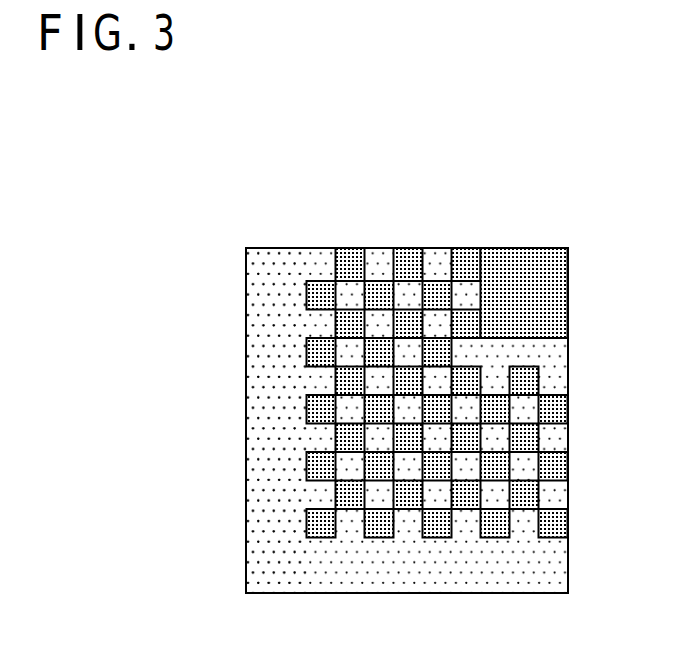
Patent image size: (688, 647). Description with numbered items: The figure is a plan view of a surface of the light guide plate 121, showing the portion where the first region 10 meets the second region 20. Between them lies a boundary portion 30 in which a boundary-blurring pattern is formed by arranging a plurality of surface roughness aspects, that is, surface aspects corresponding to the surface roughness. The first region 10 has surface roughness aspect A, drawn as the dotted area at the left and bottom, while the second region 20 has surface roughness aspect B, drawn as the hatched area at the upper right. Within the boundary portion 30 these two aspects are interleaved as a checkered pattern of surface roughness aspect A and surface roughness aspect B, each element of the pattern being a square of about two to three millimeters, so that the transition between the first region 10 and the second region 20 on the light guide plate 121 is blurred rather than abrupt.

The first region 10 is at (307, 248).
The boundary portion 30 is at (480, 248).
The second region 20 is at (568, 248).
The light guide plate 121 is at (462, 195).
The surface roughness aspect A is at (375, 580).
The surface roughness aspect B is at (569, 307).